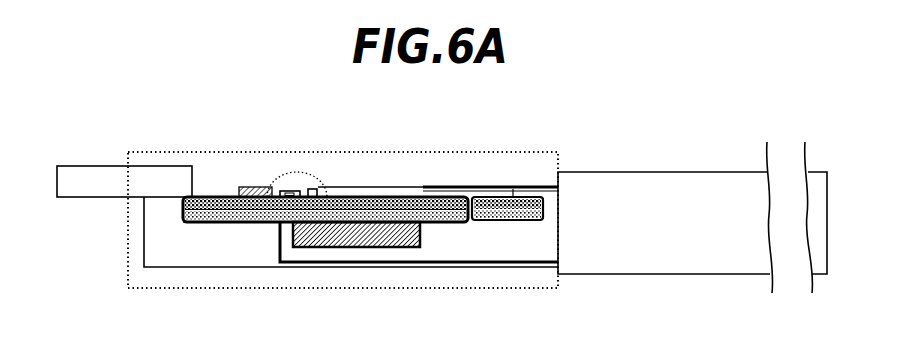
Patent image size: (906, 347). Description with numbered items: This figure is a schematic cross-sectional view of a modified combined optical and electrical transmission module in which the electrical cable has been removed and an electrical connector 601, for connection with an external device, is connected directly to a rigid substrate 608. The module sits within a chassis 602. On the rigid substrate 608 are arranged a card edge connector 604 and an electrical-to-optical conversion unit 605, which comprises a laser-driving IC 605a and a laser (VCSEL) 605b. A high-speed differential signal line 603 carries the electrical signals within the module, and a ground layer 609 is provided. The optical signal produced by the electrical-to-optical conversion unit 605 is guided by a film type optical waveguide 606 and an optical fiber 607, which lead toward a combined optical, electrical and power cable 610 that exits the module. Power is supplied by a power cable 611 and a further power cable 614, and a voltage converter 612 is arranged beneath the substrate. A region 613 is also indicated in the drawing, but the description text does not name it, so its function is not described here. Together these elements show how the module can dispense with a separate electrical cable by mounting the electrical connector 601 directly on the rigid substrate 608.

The electrical connector 601 is at (124, 203).
The chassis 602 is at (343, 198).
The high-speed differential signal line 603 is at (325, 190).
The card edge connector 604 is at (267, 150).
The electrical-to-optical conversion unit 605 is at (337, 163).
The laser-driving IC 605a is at (305, 156).
The laser (VCSEL) 605b is at (342, 152).
The film type optical waveguide 606 is at (390, 153).
The optical fiber 607 is at (490, 155).
The rigid substrate 608 is at (522, 173).
The ground layer 609 is at (575, 198).
The combined optical, electrical and power cable 610 is at (692, 213).
The power cable 611 is at (437, 240).
The voltage converter 612 is at (360, 271).
The housing 613 is at (351, 259).
The power cable 614 is at (184, 240).